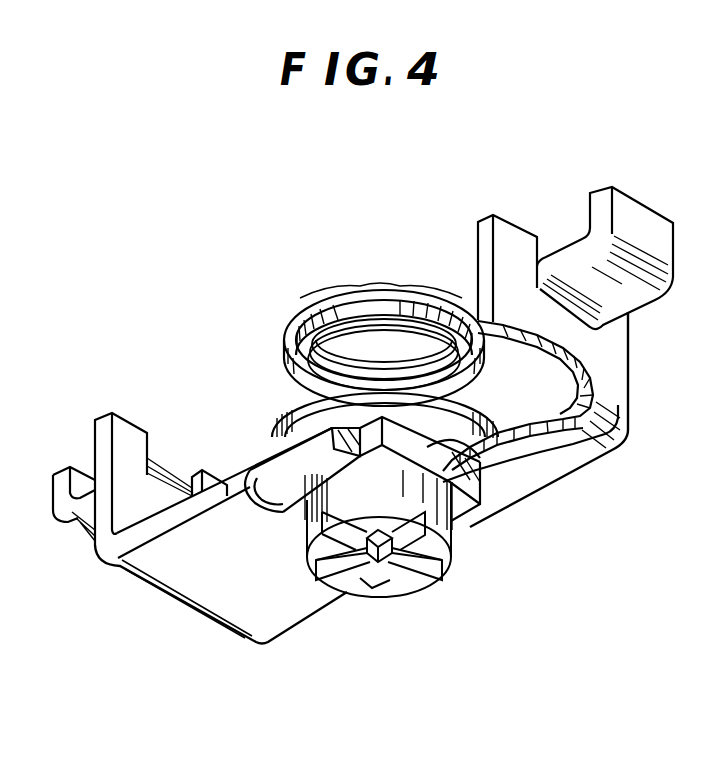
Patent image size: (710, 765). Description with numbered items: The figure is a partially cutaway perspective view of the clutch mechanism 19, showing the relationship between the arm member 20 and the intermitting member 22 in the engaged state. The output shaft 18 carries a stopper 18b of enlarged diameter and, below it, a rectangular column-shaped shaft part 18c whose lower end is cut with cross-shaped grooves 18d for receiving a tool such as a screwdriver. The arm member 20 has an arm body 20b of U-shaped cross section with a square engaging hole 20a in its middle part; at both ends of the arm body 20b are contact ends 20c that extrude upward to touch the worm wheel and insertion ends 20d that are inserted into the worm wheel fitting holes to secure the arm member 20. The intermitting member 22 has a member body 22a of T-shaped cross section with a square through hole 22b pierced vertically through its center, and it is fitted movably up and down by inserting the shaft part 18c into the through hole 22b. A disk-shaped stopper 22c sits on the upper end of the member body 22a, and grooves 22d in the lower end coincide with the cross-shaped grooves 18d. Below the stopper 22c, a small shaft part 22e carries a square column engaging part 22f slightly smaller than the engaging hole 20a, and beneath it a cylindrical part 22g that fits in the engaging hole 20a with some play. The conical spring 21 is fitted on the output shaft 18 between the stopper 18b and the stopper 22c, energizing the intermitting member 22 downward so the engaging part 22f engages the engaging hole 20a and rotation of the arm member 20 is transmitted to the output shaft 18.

The output shaft 18 is at (353, 332).
The stopper 18b is at (316, 335).
The rectangular column-shaped shaft part 18c is at (390, 582).
The cross-shaped grooves 18d is at (450, 556).
The clutch mechanism 19 is at (270, 375).
The arm member 20 is at (197, 620).
The engaging hole 20a is at (290, 449).
The arm body 20b is at (147, 578).
The contact ends 20c is at (108, 413).
The insertion ends 20d is at (70, 470).
The spring 21 is at (406, 332).
The intermitting member 22 is at (347, 597).
The member body 22a is at (318, 567).
The through hole 22b is at (375, 603).
The stopper 22c is at (472, 410).
The grooves 22d is at (417, 583).
The shaft part 22e is at (490, 518).
The engaging part 22f is at (548, 489).
The cylindrical part 22g is at (310, 520).